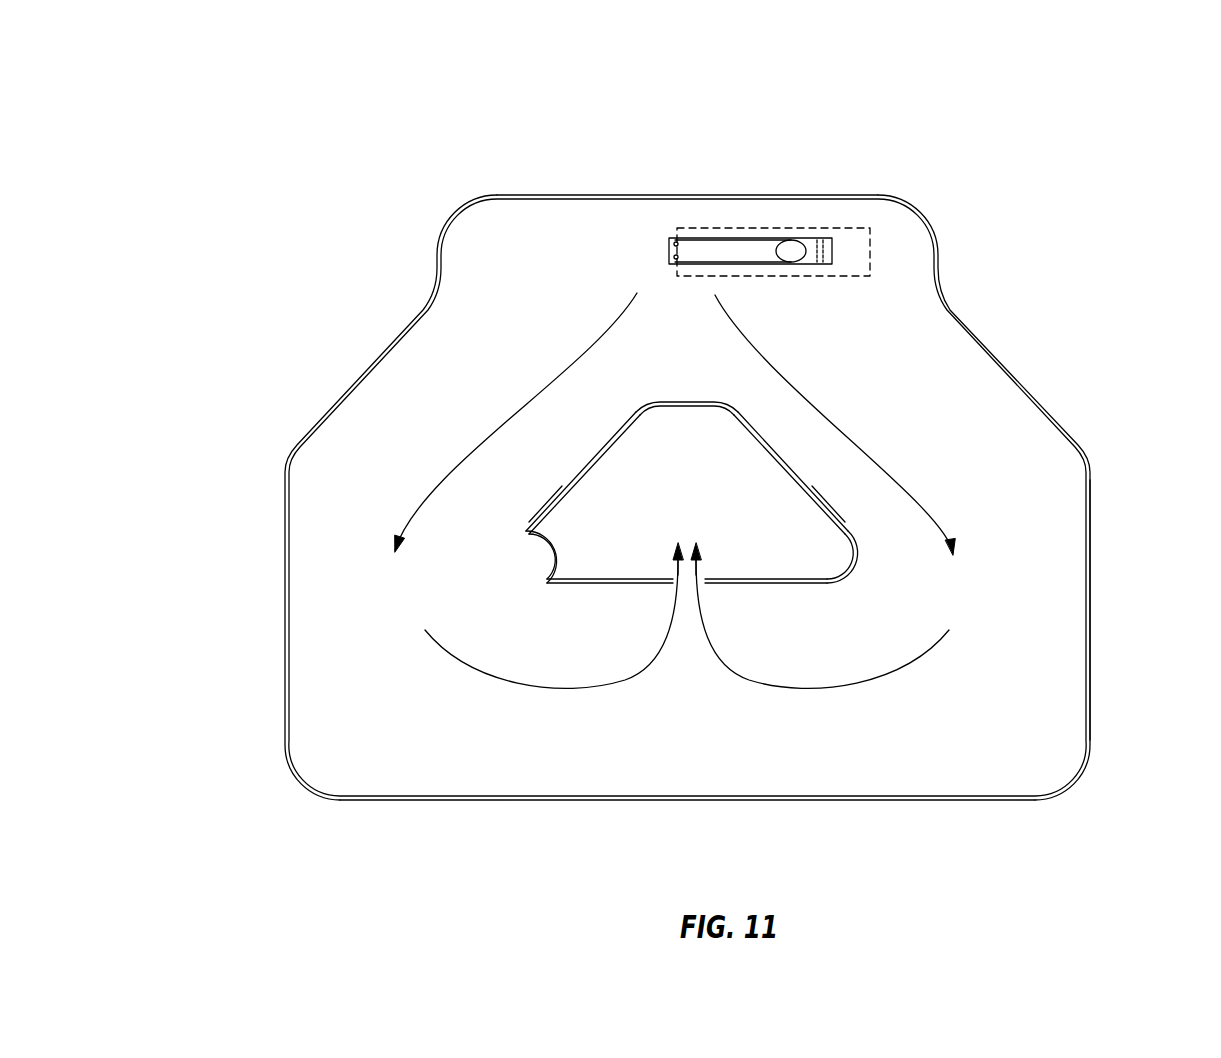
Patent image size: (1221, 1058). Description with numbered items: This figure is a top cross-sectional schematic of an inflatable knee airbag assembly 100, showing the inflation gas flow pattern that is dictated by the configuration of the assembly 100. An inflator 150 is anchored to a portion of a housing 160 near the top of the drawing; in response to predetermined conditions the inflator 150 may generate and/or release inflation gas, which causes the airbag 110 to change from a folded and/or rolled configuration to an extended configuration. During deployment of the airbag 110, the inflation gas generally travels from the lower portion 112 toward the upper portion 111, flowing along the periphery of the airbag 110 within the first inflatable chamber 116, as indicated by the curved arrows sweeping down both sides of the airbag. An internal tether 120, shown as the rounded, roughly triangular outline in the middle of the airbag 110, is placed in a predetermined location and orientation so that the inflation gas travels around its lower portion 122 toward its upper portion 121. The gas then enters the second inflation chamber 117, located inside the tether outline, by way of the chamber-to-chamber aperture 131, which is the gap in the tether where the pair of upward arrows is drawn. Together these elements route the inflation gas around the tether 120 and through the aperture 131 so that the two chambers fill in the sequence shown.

The inflatable knee airbag assembly 100 is at (1120, 260).
The airbag 110 is at (1095, 395).
The upper portion 111 is at (578, 770).
The lower portion 112 is at (583, 213).
The first inflatable chamber 116 is at (1022, 601).
The second inflation chamber 117 is at (607, 537).
The internal tether 120 is at (640, 398).
The upper portion 121 is at (622, 588).
The lower portion 122 is at (697, 400).
The chamber-to-chamber aperture 131 is at (700, 575).
The inflator 150 is at (773, 243).
The housing 160 is at (757, 228).